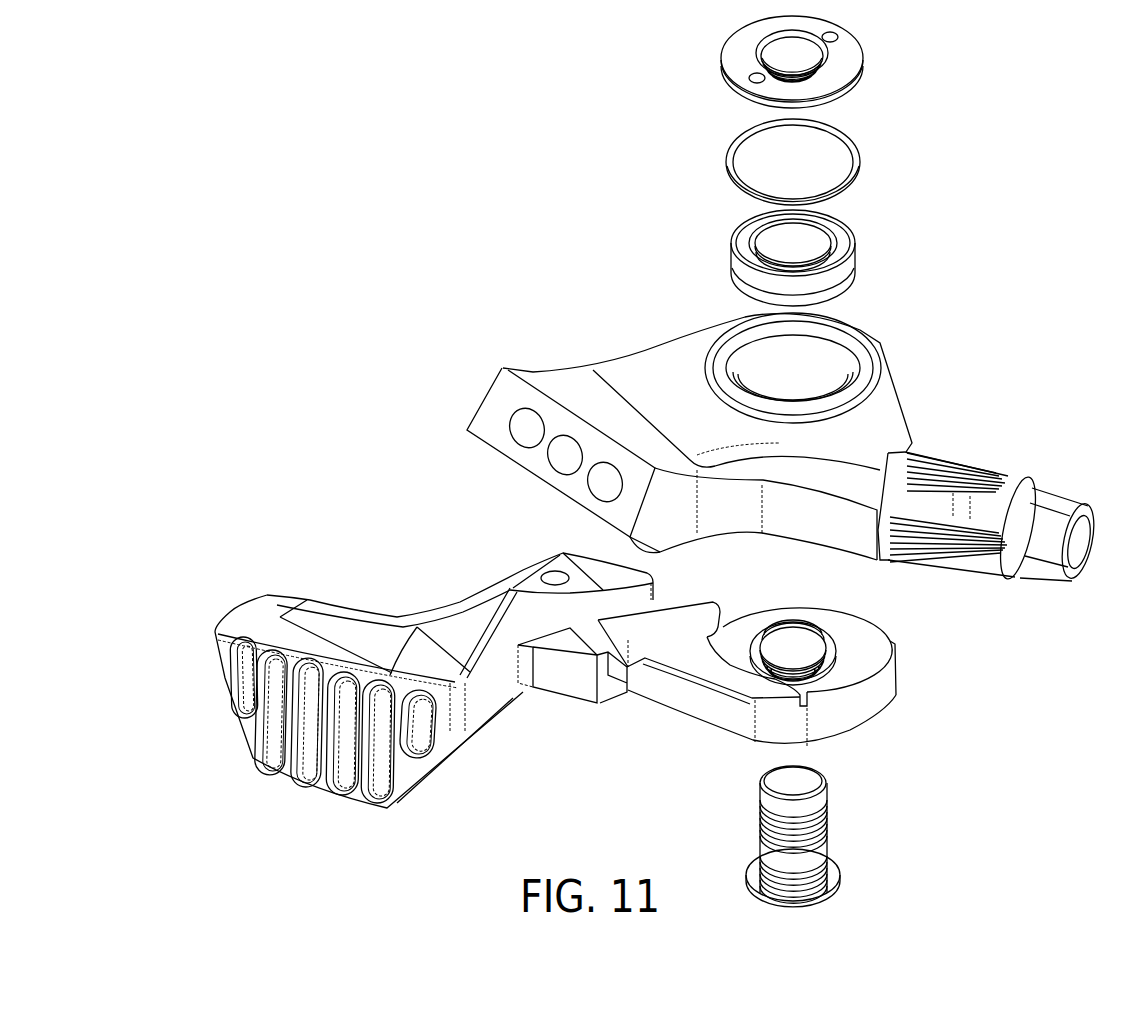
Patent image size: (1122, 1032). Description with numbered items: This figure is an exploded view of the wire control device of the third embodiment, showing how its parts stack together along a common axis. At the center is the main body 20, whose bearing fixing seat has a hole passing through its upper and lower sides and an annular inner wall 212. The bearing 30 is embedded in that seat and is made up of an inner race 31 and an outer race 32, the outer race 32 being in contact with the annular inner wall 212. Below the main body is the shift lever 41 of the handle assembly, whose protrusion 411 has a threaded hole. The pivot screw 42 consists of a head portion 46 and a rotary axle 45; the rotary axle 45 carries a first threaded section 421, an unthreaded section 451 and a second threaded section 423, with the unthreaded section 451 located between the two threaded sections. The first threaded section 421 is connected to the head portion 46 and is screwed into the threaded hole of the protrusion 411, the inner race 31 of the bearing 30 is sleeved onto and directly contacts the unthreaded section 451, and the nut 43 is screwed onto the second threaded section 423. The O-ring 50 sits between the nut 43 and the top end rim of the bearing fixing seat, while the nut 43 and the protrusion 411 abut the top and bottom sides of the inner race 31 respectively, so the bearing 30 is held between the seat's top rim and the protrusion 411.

The main body 20 is at (783, 429).
The annular inner wall 212 is at (830, 363).
The bearing 30 is at (882, 241).
The inner race 31 is at (802, 243).
The outer race 32 is at (843, 277).
The nut 43 is at (843, 62).
The O-ring 50 is at (857, 162).
The shift lever 41 is at (619, 675).
The protrusion 411 is at (827, 648).
The pivot screw 42 is at (913, 851).
The rotary axle 45 is at (892, 834).
The second threaded section 423 is at (828, 810).
The unthreaded section 451 is at (807, 838).
The first threaded section 421 is at (810, 868).
The head portion 46 is at (830, 895).